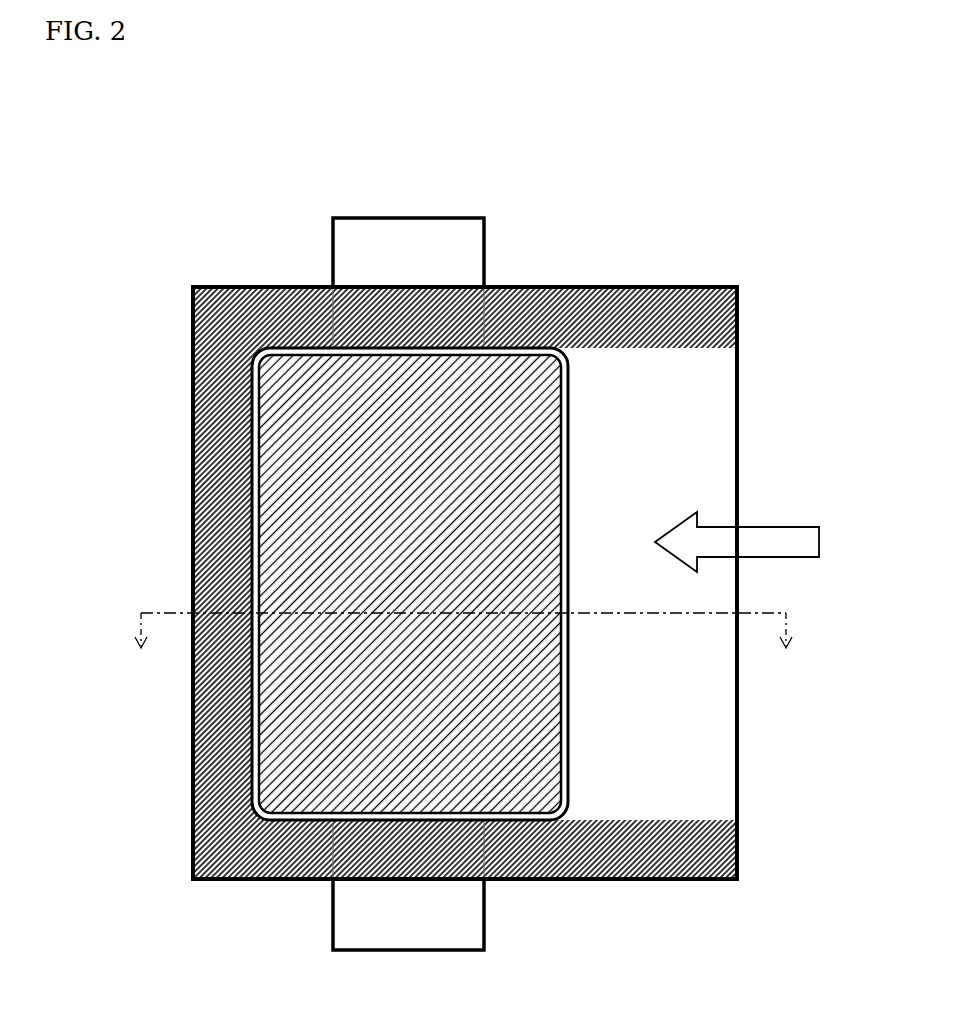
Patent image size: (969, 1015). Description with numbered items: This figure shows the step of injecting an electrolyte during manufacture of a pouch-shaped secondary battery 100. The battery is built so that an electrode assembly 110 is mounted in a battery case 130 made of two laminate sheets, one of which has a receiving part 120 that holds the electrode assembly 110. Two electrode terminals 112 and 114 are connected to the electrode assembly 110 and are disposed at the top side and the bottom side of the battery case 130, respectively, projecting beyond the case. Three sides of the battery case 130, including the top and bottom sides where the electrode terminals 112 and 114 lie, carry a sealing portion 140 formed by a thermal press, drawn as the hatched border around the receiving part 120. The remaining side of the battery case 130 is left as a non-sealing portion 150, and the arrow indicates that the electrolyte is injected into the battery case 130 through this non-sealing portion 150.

The pouch-shaped secondary battery 100 is at (208, 140).
The electrode assembly 110 is at (283, 458).
The electrode terminal 112 is at (423, 217).
The electrode terminal 114 is at (484, 914).
The receiving part 120 is at (250, 717).
The battery case 130 is at (193, 565).
The sealing portion 140 is at (570, 303).
The non-sealing portion 150 is at (712, 483).